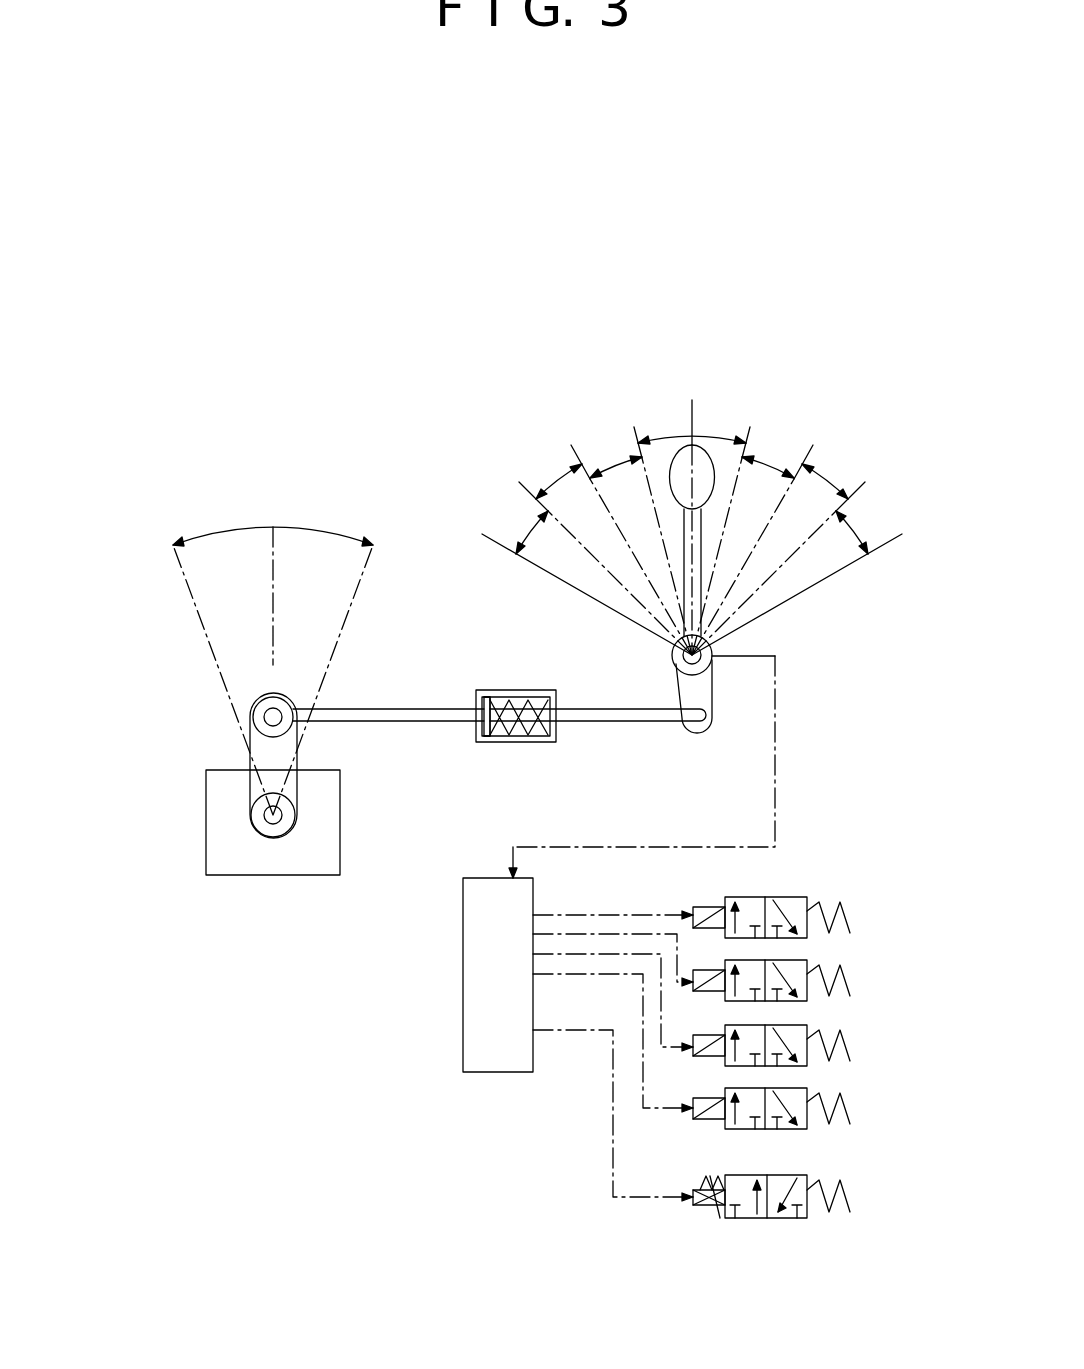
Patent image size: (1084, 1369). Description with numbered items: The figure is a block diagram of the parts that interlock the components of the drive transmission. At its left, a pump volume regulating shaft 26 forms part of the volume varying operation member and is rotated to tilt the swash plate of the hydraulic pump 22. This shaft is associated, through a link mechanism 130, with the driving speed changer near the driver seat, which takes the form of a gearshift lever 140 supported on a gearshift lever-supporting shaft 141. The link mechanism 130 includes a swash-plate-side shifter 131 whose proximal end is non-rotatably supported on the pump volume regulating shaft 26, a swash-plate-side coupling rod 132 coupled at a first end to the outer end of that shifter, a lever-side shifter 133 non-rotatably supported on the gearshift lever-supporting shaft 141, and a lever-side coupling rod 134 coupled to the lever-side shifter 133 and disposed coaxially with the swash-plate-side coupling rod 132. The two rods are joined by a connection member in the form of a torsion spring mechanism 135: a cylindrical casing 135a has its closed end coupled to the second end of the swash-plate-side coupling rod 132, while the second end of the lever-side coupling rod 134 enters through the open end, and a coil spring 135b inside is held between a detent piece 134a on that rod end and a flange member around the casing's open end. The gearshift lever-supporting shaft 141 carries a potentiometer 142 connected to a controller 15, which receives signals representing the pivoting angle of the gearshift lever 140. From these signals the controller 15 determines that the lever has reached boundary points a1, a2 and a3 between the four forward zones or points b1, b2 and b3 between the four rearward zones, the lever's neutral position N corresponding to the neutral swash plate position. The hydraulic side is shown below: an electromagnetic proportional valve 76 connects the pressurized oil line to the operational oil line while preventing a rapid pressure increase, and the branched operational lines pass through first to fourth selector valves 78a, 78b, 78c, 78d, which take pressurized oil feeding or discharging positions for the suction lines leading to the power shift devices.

The controller 15 is at (482, 1053).
The hydraulic pump 22 is at (206, 827).
The pump volume regulating shaft 26 is at (272, 818).
The electromagnetic proportional valve 76 is at (780, 1218).
The first selector valve 78a is at (807, 897).
The second selector valve 78b is at (807, 960).
The third selector valve 78c is at (810, 1027).
The fourth selector valve 78d is at (810, 1090).
The link mechanism 130 is at (403, 750).
The swash-plate-side shifter 131 is at (265, 755).
The swash-plate-side coupling rod 132 is at (362, 717).
The lever-side shifter 133 is at (703, 690).
The lever-side coupling rod 134 is at (608, 717).
The detent piece 134a is at (490, 738).
The torsion spring mechanism 135 is at (521, 663).
The cylindrical casing 135a is at (491, 681).
The coil spring 135b is at (548, 690).
The gearshift lever 140 is at (700, 458).
The gearshift lever-supporting shaft 141 is at (717, 667).
The potentiometer 142 is at (713, 647).
The boundary point a1 is at (633, 430).
The boundary point a2 is at (572, 447).
The boundary point a3 is at (518, 480).
The boundary point b1 is at (752, 430).
The boundary point b2 is at (811, 447).
The boundary point b3 is at (863, 483).